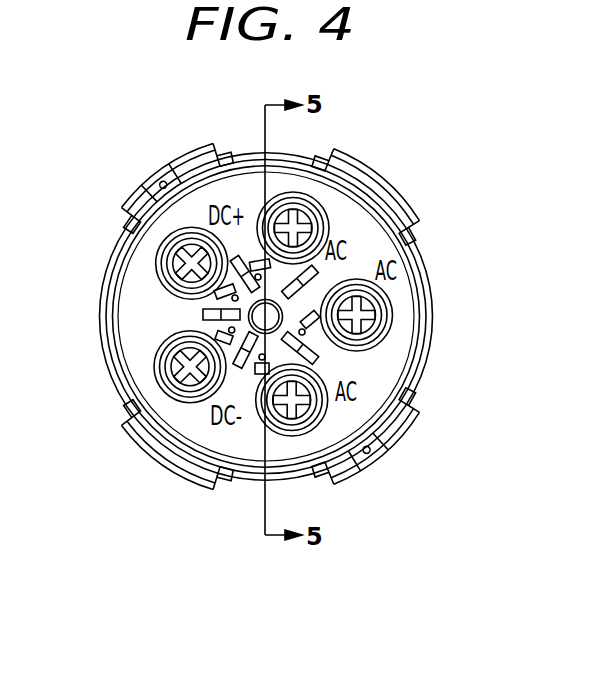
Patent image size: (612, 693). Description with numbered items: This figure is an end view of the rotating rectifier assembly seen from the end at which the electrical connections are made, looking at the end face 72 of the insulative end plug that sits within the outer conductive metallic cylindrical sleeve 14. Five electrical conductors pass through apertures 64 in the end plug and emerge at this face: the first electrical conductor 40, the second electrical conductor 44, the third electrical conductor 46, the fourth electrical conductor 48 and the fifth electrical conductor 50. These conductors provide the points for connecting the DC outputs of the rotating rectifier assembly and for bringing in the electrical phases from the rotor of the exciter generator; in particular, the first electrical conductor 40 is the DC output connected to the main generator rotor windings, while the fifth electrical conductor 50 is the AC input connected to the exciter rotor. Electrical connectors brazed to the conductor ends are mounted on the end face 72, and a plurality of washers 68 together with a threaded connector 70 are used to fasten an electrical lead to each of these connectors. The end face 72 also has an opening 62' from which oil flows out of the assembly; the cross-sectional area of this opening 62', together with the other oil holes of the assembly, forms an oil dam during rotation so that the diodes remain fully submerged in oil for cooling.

The outer conductive metallic cylindrical sleeve 14 is at (119, 236).
The fourth electrical conductor 48 is at (258, 270).
The threaded connector 70 is at (322, 181).
The washers 68 is at (333, 200).
The apertures 64 is at (343, 214).
The end face 72 is at (403, 307).
The fifth electrical conductor 50 is at (352, 363).
The second electrical conductor 44 is at (203, 309).
The first electrical conductor 40 is at (228, 334).
The opening 62' is at (170, 401).
The third electrical conductor 46 is at (258, 375).